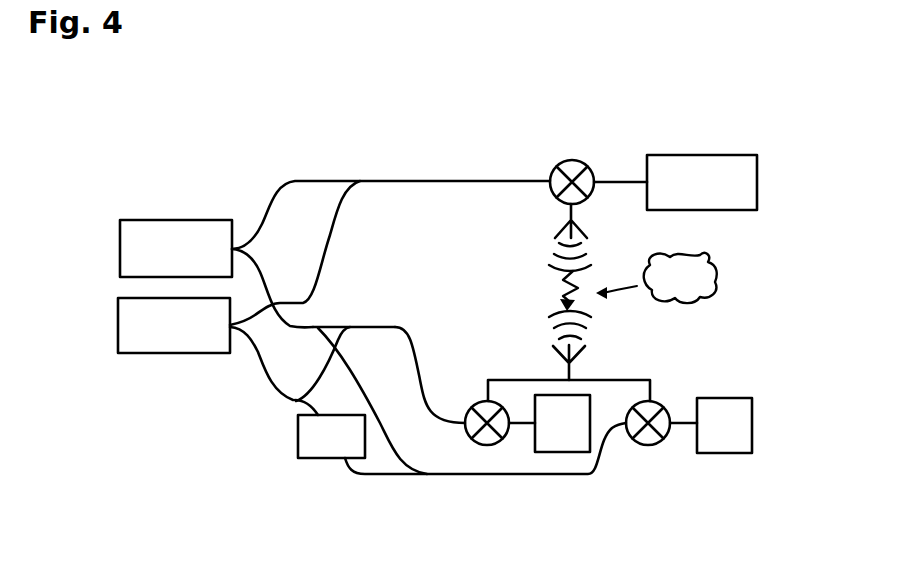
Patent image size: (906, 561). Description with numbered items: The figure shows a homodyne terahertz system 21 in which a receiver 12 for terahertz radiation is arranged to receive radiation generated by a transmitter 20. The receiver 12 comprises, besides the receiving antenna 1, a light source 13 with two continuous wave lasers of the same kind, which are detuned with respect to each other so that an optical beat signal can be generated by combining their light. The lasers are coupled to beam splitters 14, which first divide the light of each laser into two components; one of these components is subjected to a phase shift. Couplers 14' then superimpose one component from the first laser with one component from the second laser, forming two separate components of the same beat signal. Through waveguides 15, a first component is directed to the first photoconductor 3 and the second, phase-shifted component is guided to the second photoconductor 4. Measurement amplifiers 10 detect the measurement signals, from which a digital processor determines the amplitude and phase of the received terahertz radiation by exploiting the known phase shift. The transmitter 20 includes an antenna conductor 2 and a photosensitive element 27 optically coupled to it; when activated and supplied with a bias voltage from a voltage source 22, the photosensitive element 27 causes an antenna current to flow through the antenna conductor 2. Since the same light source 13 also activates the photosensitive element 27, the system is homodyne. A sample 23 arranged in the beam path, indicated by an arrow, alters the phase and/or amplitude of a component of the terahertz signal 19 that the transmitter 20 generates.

The receiving antenna 1 is at (640, 360).
The antenna conductor 2 is at (558, 229).
The first photoconductor 3 is at (475, 403).
The second photoconductor 4 is at (667, 404).
The measurement amplifiers 10 is at (572, 452).
The receiver 12 is at (178, 431).
The light source 13 is at (97, 290).
The beam splitters 14 is at (316, 362).
The couplers 14' is at (472, 367).
The waveguides 15 is at (442, 428).
The terahertz signal 19 is at (550, 263).
The transmitter 20 is at (546, 139).
The terahertz system 21 is at (296, 118).
The voltage source 22 is at (708, 155).
The sample 23 is at (693, 281).
The photosensitive element 27 is at (588, 166).